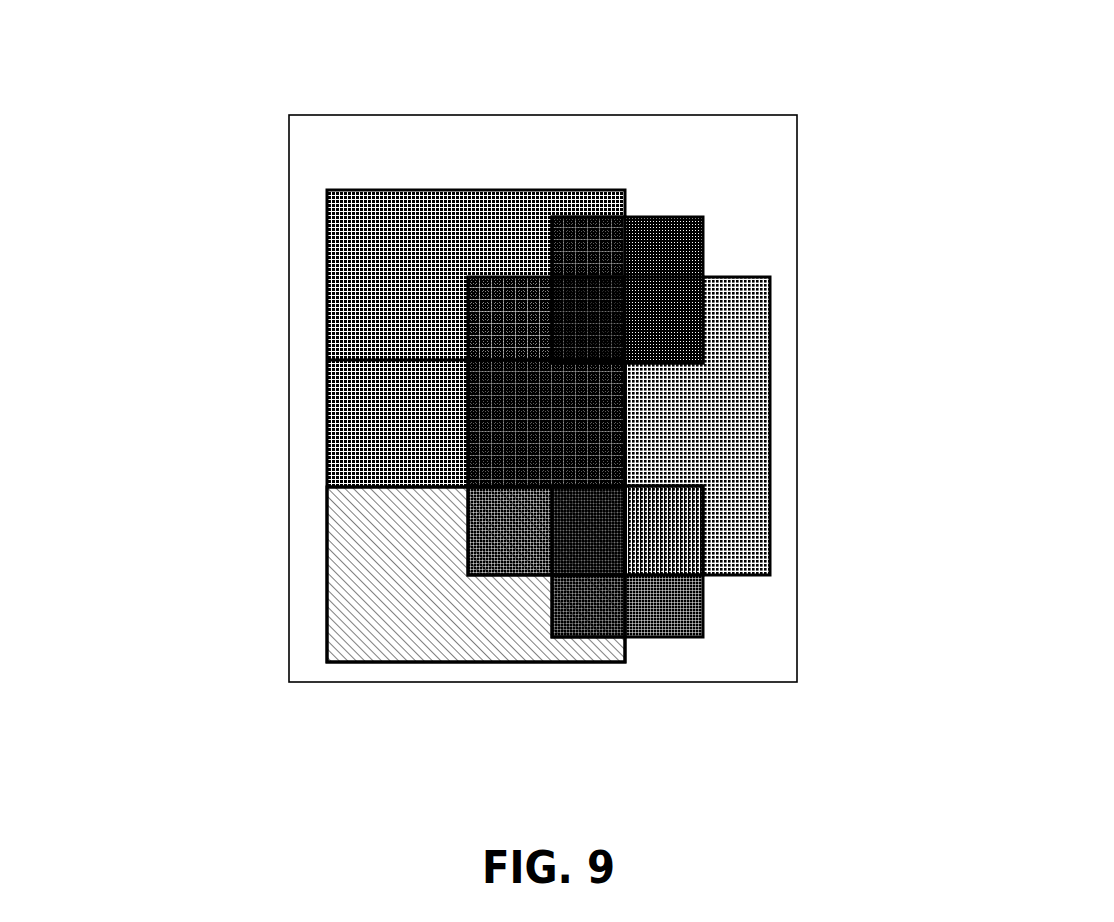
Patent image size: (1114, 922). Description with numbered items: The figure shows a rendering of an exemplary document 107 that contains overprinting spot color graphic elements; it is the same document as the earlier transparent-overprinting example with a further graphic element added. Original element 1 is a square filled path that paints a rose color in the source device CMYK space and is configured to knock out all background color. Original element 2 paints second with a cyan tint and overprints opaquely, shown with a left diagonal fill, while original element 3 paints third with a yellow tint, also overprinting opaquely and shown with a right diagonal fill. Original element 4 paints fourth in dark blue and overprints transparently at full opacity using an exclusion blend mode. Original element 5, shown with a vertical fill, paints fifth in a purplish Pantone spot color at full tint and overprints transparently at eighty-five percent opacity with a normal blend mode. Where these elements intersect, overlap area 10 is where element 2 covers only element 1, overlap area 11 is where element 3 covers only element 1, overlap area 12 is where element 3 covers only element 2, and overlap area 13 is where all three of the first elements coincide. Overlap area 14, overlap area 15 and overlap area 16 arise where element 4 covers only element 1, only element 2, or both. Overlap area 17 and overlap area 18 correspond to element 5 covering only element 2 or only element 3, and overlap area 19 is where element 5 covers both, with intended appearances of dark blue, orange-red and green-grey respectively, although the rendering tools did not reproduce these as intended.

The exemplary document 107 is at (315, 116).
The original element 1 is at (268, 218).
The original element 2 is at (888, 228).
The original element 3 is at (290, 520).
The original element 4 is at (628, 7).
The original element 5 is at (875, 521).
The overlap area 10 is at (546, 426).
The overlap area 11 is at (476, 423).
The overlap area 12 is at (546, 531).
The overlap area 13 is at (546, 423).
The overlap area 14 is at (588, 247).
The overlap area 15 is at (664, 320).
The overlap area 16 is at (588, 320).
The overlap area 17 is at (664, 530).
The overlap area 18 is at (588, 606).
The overlap area 19 is at (588, 530).